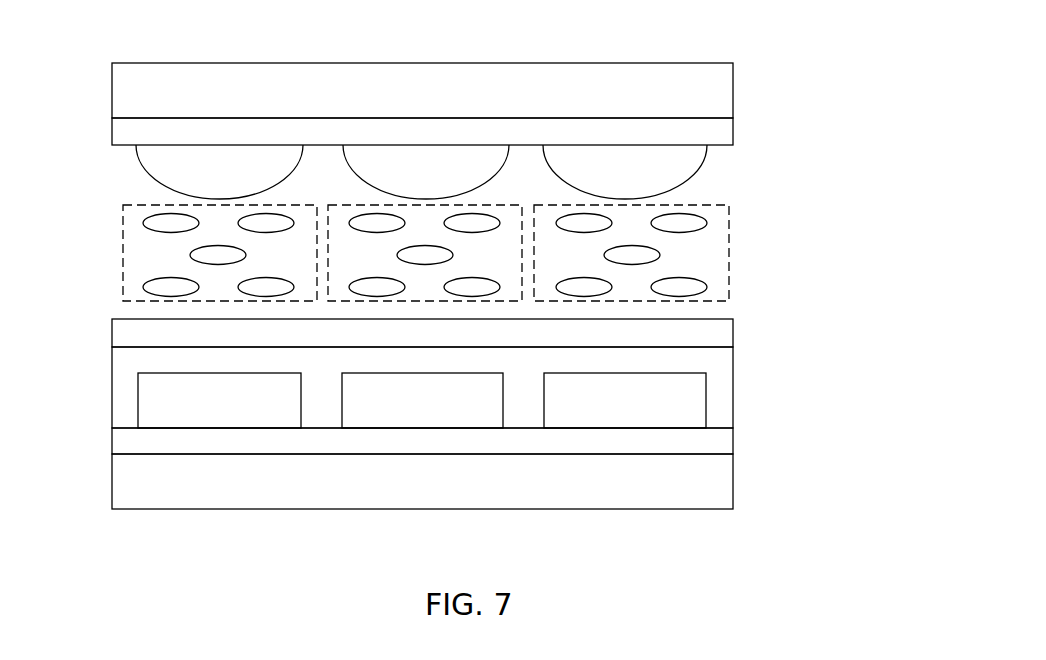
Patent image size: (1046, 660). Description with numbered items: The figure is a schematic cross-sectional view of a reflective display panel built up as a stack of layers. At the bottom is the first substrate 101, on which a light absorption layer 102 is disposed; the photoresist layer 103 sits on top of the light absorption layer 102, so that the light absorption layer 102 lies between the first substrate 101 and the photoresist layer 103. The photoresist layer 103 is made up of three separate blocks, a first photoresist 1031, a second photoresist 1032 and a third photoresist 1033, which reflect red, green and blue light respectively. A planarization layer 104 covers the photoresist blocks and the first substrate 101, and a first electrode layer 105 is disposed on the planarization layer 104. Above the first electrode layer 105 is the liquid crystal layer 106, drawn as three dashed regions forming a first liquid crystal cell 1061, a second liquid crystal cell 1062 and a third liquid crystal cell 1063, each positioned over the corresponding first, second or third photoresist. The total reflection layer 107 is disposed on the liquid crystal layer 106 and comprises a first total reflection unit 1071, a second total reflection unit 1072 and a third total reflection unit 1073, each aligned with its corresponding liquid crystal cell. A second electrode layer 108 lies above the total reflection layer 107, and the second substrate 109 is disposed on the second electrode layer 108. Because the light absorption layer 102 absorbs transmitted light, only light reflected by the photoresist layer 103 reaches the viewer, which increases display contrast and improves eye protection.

The first substrate 101 is at (733, 493).
The light absorption layer 102 is at (733, 445).
The photoresist layer 103 is at (502, 358).
The first photoresist 1031 is at (152, 400).
The second photoresist 1032 is at (419, 404).
The third photoresist 1033 is at (706, 413).
The planarization layer 104 is at (733, 390).
The first electrode layer 105 is at (733, 334).
The liquid crystal layer 106 is at (502, 301).
The first liquid crystal cell 1061 is at (138, 272).
The second liquid crystal cell 1062 is at (345, 263).
The third liquid crystal cell 1063 is at (700, 253).
The total reflection layer 107 is at (502, 276).
The first total reflection unit 1071 is at (162, 154).
The second total reflection unit 1072 is at (420, 167).
The third total reflection unit 1073 is at (678, 165).
The second electrode layer 108 is at (733, 133).
The second substrate 109 is at (733, 88).